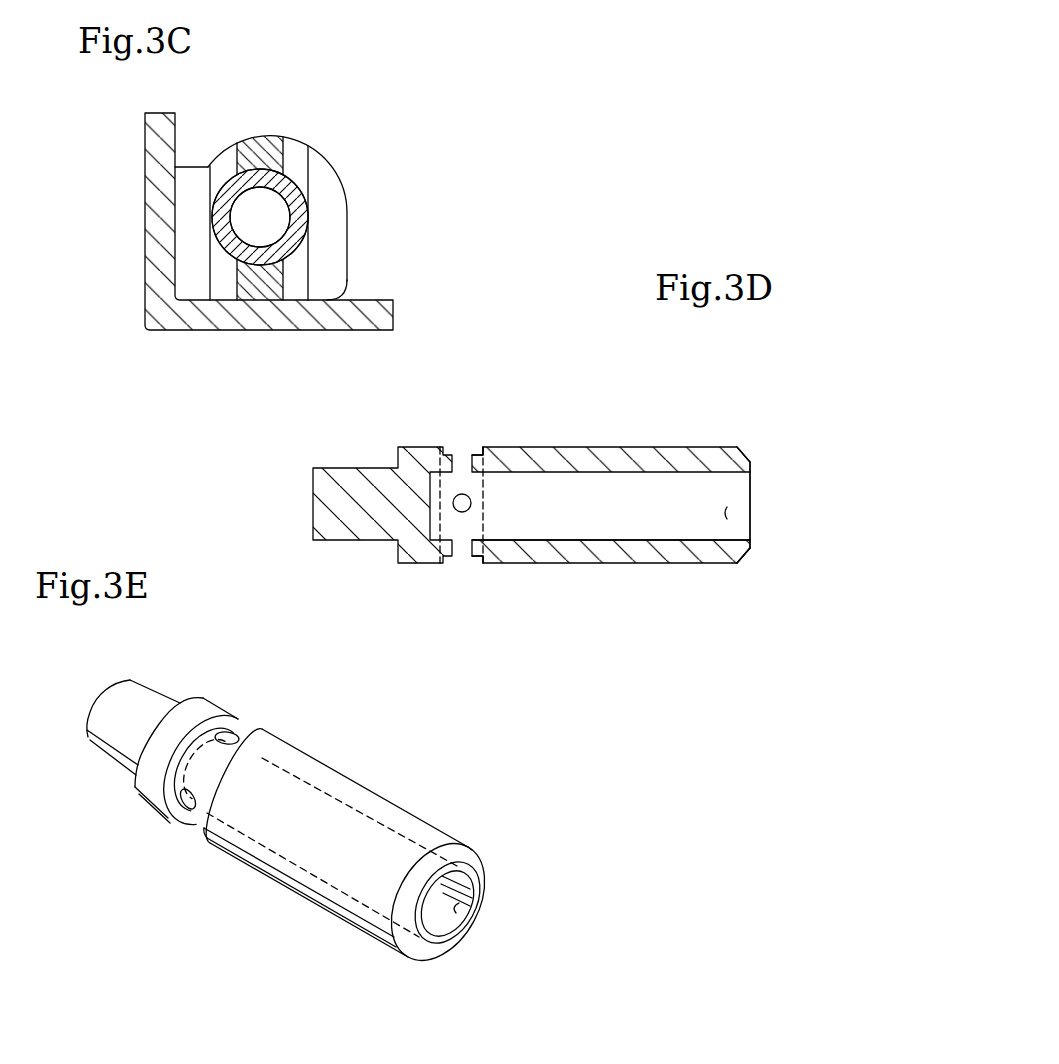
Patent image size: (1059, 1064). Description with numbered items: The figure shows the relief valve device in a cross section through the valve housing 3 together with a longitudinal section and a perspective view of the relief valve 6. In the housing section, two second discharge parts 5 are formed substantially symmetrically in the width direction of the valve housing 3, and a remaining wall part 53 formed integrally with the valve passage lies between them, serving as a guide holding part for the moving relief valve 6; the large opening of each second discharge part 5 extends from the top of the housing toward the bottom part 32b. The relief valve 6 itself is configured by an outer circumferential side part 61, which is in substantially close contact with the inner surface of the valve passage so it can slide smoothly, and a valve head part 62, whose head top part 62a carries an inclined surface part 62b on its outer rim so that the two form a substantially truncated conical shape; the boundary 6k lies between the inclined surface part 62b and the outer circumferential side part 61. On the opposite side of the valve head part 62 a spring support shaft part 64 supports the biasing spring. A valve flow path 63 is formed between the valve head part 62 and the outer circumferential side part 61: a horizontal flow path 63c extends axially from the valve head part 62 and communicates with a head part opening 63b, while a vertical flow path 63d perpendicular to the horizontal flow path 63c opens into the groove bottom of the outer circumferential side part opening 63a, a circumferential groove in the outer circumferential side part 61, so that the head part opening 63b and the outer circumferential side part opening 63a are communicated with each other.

In FIG. 3C, the valve housing 3 is at (358, 223).
In FIG. 3C, the second discharge part 5 is at (228, 160).
In FIG. 3C, the relief valve 6 is at (306, 176).
In FIG. 3D, the relief valve 6 is at (595, 473).
In FIG. 3E, the relief valve 6 is at (301, 827).
In FIG. 3C, the remaining wall part 53 is at (257, 137).
In FIG. 3C, the horizontal flow path 63c is at (270, 220).
In FIG. 3D, the horizontal flow path 63c is at (627, 517).
In FIG. 3C, the bottom part 32b is at (350, 287).
In FIG. 3D, the spring support shaft part 64 is at (316, 498).
In FIG. 3E, the spring support shaft part 64 is at (113, 690).
In FIG. 3D, the vertical flow path 63d is at (463, 463).
In FIG. 3E, the vertical flow path 63d is at (226, 740).
In FIG. 3D, the outer circumferential side part opening 63a is at (477, 452).
In FIG. 3E, the outer circumferential side part opening 63a is at (252, 732).
In FIG. 3D, the outer circumferential side part 61 is at (616, 447).
In FIG. 3E, the outer circumferential side part 61 is at (372, 790).
In FIG. 3D, the inclined surface part 62b is at (744, 446).
In FIG. 3E, the inclined surface part 62b is at (470, 857).
In FIG. 3D, the valve head part 62 is at (752, 465).
In FIG. 3E, the valve head part 62 is at (463, 867).
In FIG. 3D, the head part opening 63b is at (752, 492).
In FIG. 3E, the head part opening 63b is at (443, 928).
In FIG. 3D, the valve flow path 63 is at (727, 513).
In FIG. 3E, the valve flow path 63 is at (458, 908).
In FIG. 3D, the head top part 62a is at (752, 547).
In FIG. 3E, the head top part 62a is at (483, 880).
In FIG. 3D, the boundary 6k is at (738, 566).
In FIG. 3E, the boundary 6k is at (448, 858).